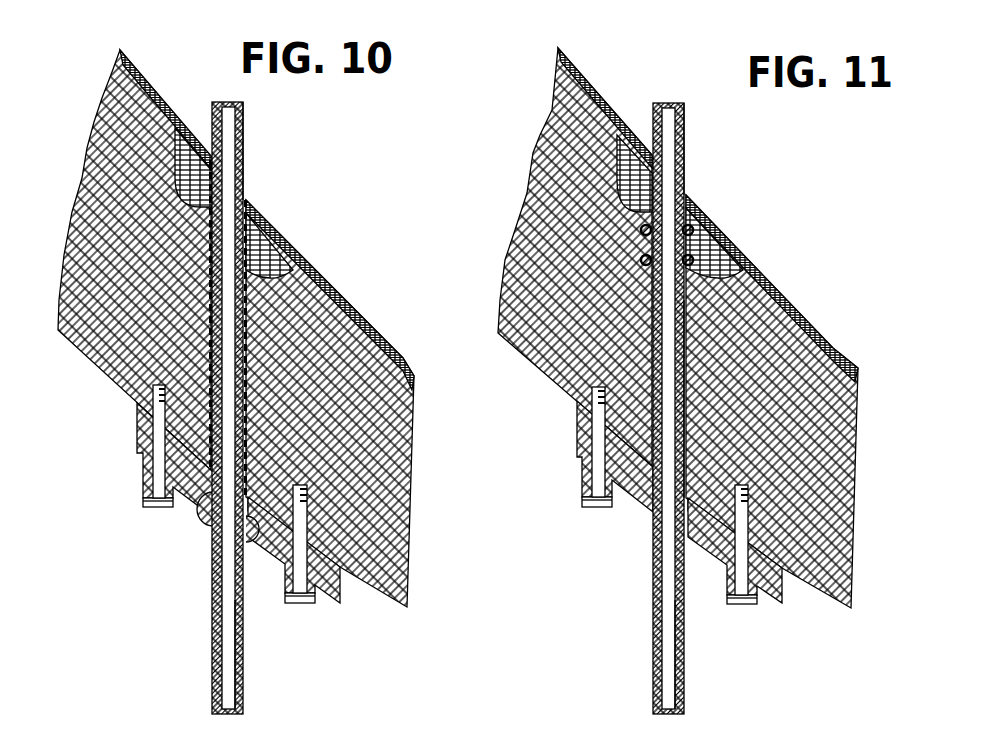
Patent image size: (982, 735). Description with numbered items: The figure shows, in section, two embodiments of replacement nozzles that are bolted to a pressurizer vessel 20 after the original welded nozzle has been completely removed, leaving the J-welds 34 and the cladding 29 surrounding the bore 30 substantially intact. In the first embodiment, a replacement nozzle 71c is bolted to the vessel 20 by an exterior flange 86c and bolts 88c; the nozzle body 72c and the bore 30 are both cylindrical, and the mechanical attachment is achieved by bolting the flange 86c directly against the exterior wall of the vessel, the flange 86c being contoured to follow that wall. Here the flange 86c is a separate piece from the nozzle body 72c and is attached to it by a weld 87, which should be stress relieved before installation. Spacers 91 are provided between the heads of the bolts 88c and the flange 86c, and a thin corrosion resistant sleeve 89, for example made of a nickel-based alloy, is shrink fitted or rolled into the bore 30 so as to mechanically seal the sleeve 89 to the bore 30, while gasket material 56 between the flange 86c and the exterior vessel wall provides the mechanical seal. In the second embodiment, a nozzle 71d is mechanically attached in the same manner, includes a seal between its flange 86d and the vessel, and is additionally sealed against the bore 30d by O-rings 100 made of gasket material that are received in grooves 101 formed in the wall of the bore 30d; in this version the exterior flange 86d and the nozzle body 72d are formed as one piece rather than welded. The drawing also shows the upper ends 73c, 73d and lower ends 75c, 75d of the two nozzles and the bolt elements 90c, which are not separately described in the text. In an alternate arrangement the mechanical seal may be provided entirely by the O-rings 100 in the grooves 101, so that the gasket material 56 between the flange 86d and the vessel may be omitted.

In FIG. 10, the vessel 20 is at (269, 328).
In FIG. 11, the vessel 20 is at (669, 313).
In FIG. 10, the cladding 29 is at (364, 321).
In FIG. 11, the cladding 29 is at (577, 75).
In FIG. 10, the bore 30 is at (208, 277).
In FIG. 11, the bore 30d is at (684, 343).
In FIG. 10, the J-welds 34 is at (268, 237).
In FIG. 11, the J-welds 34 is at (632, 148).
In FIG. 10, the gasket material 56 is at (254, 497).
In FIG. 11, the gasket material 56 is at (698, 497).
In FIG. 10, the replacement nozzle 71c is at (232, 408).
In FIG. 11, the nozzle 71d is at (662, 408).
In FIG. 10, the nozzle body 72c is at (254, 393).
In FIG. 11, the nozzle body 72d is at (681, 388).
In FIG. 10, the post upper end 73c is at (244, 128).
In FIG. 11, the post upper end 73d is at (685, 123).
In FIG. 10, the post lower end 75c is at (239, 692).
In FIG. 11, the post lower end 75d is at (684, 692).
In FIG. 10, the exterior flange 86c is at (140, 437).
In FIG. 11, the exterior flange 86d is at (577, 440).
In FIG. 10, the weld 87 is at (202, 511).
In FIG. 10, the bolts 88c is at (157, 458).
In FIG. 11, the bolts 88c is at (587, 407).
In FIG. 10, the corrosion resistant sleeve 89 is at (249, 353).
In FIG. 10, the bolt 90c is at (153, 388).
In FIG. 11, the bolt 90c is at (610, 403).
In FIG. 10, the spacers 91 is at (286, 585).
In FIG. 11, the O-rings 100 is at (691, 227).
In FIG. 11, the grooves 101 is at (694, 236).